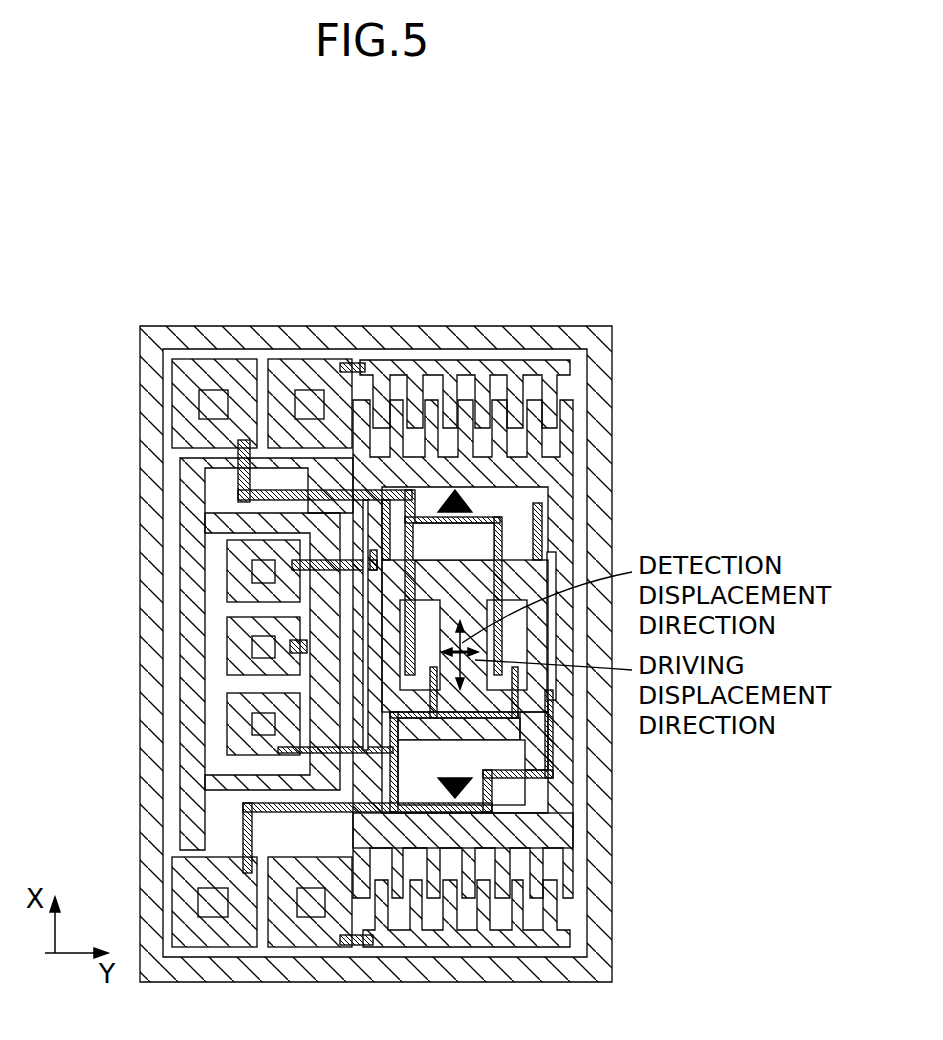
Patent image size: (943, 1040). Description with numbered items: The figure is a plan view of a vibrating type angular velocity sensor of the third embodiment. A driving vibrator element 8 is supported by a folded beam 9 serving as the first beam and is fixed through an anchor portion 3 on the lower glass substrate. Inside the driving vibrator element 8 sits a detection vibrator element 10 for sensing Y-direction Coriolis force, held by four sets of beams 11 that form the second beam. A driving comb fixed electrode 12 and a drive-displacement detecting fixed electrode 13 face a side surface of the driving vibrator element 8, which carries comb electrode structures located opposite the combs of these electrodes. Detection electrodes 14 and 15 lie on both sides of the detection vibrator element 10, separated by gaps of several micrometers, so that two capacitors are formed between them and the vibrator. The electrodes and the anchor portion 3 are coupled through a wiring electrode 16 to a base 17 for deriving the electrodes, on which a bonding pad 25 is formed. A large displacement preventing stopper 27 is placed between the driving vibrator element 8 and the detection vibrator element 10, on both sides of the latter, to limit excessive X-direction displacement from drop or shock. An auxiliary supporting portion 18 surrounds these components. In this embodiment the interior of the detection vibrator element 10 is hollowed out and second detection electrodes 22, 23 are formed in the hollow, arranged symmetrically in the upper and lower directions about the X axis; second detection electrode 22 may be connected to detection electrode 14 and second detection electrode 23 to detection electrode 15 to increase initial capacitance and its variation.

The anchor portion 3 is at (312, 640).
The driving vibrator element 8 is at (398, 390).
The beam used for the driving vibrator element 9 is at (207, 520).
The detection vibrator element 10 is at (525, 620).
The beam used for the detection vibrator element 11 is at (565, 828).
The driving comb fixed electrode 12 is at (522, 365).
The drive-displacement detecting fixed electrode 13 is at (545, 910).
The detection electrode 14 is at (385, 703).
The detection electrode 15 is at (553, 730).
The wiring electrode 16 is at (247, 440).
The base for deriving the respective electrodes 17 is at (280, 362).
The auxiliary supporting portion 18 is at (157, 412).
The second detection electrode 22 is at (528, 800).
The second detection electrode 23 is at (415, 612).
The bonding pad 25 is at (203, 378).
The large displacement preventing stopper 27 is at (470, 497).